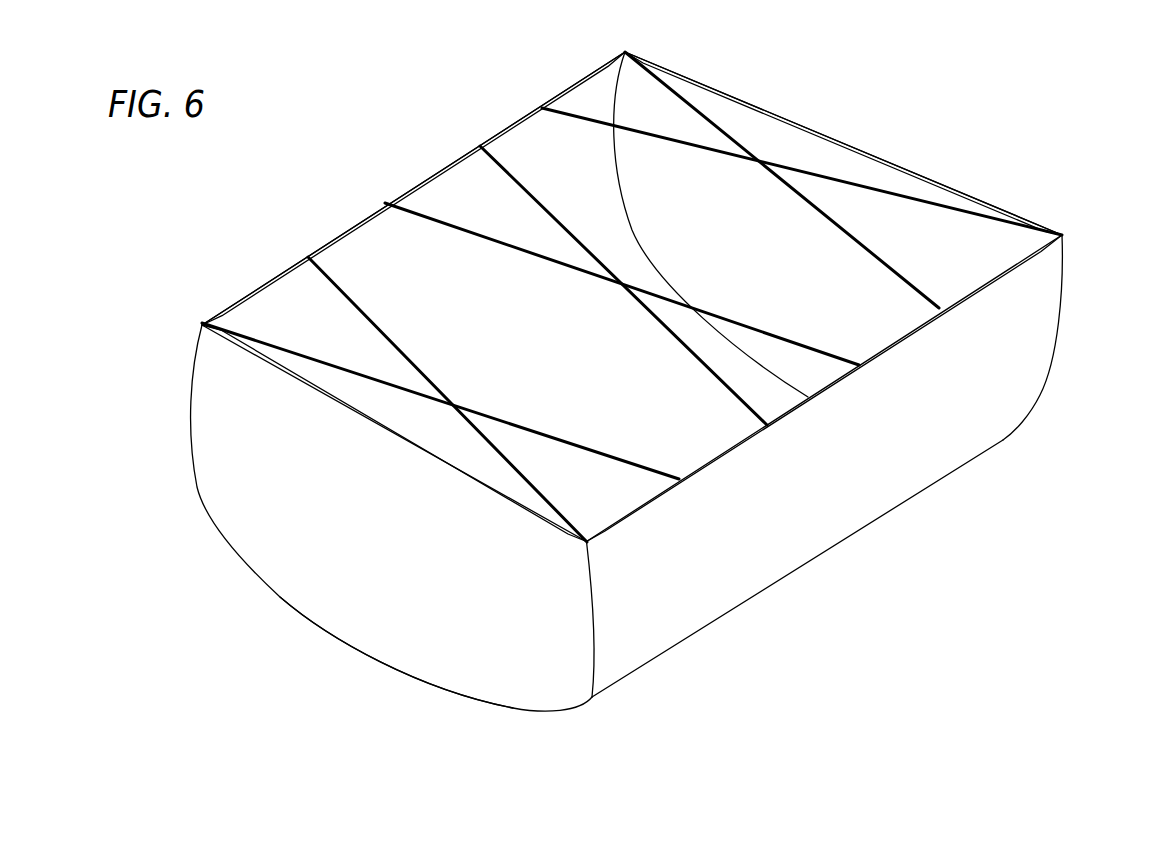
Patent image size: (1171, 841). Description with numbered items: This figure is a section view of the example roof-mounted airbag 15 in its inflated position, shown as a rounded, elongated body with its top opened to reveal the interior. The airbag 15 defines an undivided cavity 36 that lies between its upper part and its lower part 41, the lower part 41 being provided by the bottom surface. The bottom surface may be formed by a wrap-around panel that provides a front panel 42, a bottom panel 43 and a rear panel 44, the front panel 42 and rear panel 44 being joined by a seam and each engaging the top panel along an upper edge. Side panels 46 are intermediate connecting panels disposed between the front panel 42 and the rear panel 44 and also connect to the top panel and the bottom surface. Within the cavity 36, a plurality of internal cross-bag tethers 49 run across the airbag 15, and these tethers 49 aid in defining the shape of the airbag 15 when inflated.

The airbag 15 is at (583, 78).
The cavity 36 is at (768, 137).
The lower part 41 is at (374, 655).
The front panel 42 is at (265, 283).
The bottom panel 43 is at (340, 634).
The rear panel 44 is at (1042, 295).
The side panels 46 is at (913, 172).
The internal cross-bag tethers 49 is at (774, 176).